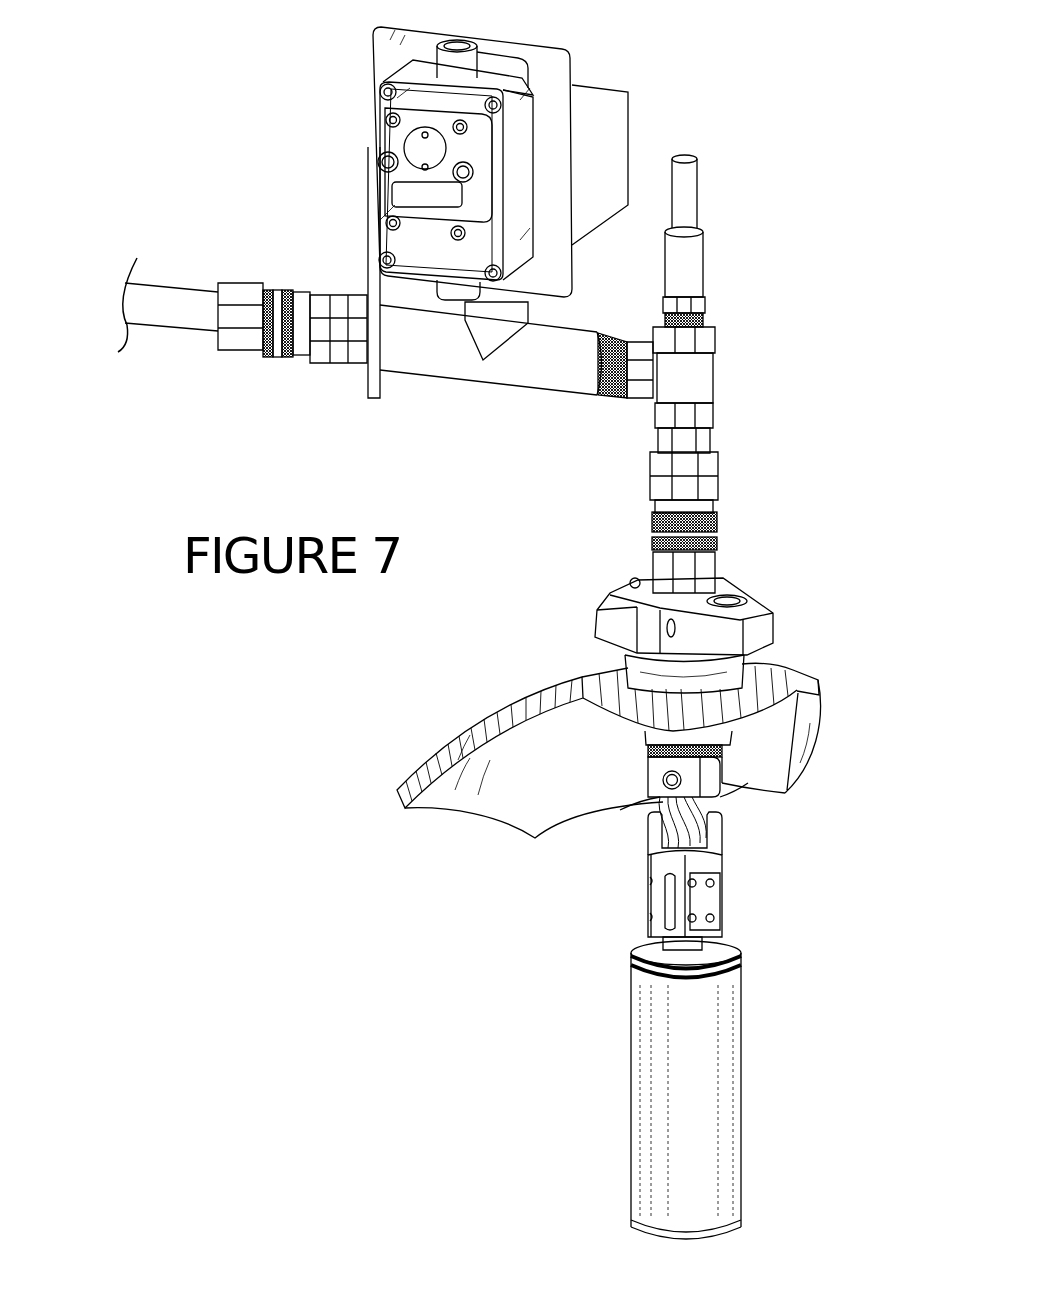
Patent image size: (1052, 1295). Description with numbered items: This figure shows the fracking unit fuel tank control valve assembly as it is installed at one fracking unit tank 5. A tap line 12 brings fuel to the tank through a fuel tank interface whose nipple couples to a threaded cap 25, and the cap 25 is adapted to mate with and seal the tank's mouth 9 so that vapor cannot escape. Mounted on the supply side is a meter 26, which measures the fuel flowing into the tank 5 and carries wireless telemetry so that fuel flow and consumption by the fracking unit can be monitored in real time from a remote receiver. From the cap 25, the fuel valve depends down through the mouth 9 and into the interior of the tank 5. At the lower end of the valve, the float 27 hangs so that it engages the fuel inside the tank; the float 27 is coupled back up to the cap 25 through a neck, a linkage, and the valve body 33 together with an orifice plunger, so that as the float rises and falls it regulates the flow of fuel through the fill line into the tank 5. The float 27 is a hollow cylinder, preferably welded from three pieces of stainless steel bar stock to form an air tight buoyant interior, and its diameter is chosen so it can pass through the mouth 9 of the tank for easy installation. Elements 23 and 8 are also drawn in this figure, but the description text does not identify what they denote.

The meter 26 is at (345, 114).
The tap line 12 is at (172, 300).
The sensor rod 23 is at (690, 253).
The threaded cap 25 is at (618, 613).
The mouth 9 is at (780, 670).
The fracking unit tank 5 is at (467, 728).
The blade skirt 8 is at (493, 803).
The valve body 33 is at (642, 853).
The float 27 is at (643, 1028).